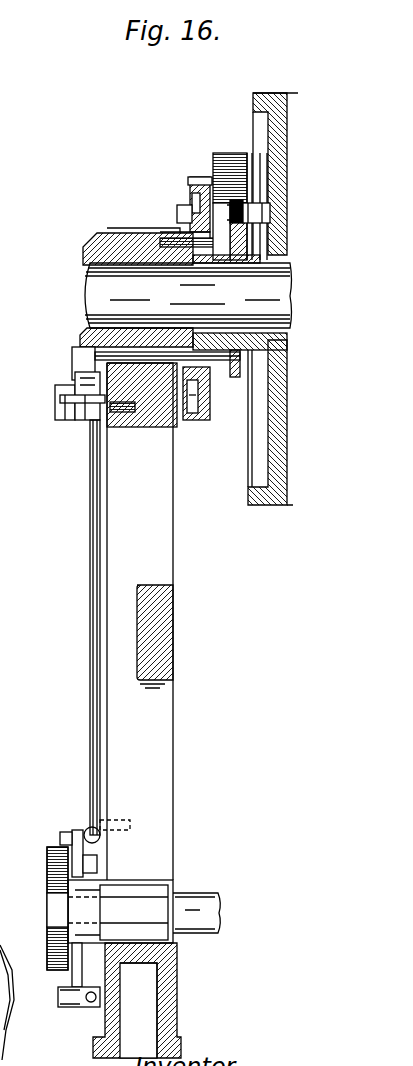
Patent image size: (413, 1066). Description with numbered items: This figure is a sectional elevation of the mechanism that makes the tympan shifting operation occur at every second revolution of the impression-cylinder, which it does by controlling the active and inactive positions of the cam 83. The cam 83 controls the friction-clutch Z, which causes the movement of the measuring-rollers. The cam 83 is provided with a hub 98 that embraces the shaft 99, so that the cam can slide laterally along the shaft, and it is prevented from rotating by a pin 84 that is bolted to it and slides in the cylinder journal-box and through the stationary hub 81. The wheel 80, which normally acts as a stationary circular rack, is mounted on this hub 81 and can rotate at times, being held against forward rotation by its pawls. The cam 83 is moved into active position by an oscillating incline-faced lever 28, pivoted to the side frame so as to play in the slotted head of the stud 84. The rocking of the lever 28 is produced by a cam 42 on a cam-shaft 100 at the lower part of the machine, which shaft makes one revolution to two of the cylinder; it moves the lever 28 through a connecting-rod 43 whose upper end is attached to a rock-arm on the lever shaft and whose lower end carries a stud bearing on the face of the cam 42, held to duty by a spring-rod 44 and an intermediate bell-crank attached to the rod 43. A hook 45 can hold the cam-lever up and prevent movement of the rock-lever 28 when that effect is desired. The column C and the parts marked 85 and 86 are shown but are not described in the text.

The column C is at (268, 133).
The friction-clutch Z is at (212, 156).
The block 85 is at (230, 206).
The stationary hub 81 is at (187, 228).
The shaft 99 is at (188, 295).
The cam 83 is at (240, 262).
The bolt 86 is at (263, 260).
The pin (stud) 84 is at (75, 355).
The oscillating incline-faced lever 28 is at (70, 372).
The hub 98 is at (263, 342).
The wheel 80 is at (201, 421).
The connecting-rod 43 is at (90, 643).
The hook 45 is at (100, 822).
The cam 42 is at (50, 882).
The cam-shaft 100 is at (144, 916).
The spring-rod 44 is at (79, 984).